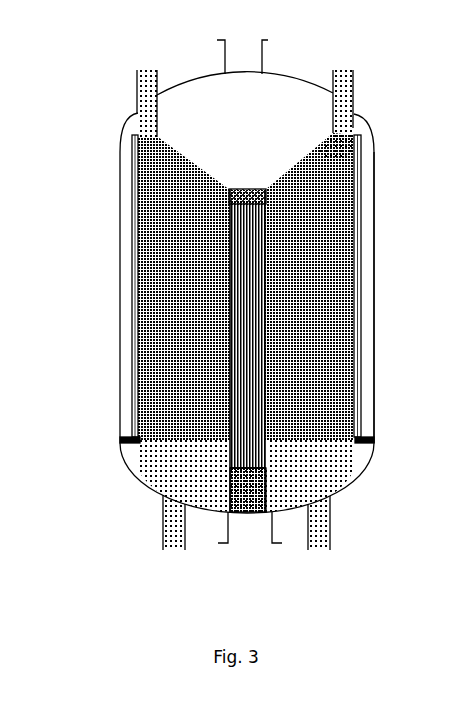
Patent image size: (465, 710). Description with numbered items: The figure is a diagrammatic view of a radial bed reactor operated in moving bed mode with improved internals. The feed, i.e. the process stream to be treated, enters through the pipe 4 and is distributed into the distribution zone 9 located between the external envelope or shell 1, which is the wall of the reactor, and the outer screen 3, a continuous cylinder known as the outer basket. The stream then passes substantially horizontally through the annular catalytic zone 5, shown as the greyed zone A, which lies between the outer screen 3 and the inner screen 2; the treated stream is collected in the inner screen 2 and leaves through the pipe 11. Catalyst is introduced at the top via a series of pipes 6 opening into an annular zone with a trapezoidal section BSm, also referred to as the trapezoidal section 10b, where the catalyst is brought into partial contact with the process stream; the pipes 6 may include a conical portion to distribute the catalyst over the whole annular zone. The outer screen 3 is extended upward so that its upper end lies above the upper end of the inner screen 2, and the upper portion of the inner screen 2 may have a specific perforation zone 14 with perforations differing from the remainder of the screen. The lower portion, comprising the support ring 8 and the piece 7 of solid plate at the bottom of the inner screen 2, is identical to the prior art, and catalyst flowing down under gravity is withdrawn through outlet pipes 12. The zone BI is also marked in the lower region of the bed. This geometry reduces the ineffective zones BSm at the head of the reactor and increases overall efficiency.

The external envelope or shell 1 is at (120, 152).
The inner screen 2 is at (255, 238).
The outer screen 3 is at (132, 262).
The pipe 4 is at (257, 53).
The annular catalytic zone 5 is at (158, 330).
The pipes 6 is at (353, 92).
The piece of solid plate 7 is at (228, 511).
The support ring 8 is at (122, 448).
The distribution zone 9 is at (374, 352).
The annular zone with a trapezoidal section 10b is at (356, 114).
The pipe 11 is at (252, 537).
The outlet pipes 12 is at (317, 543).
The specific perforation zone 14 is at (265, 190).
The catalytic zone A is at (184, 347).
The inert bed BI is at (163, 467).
The annular zone with a trapezoidal section BSm is at (152, 139).